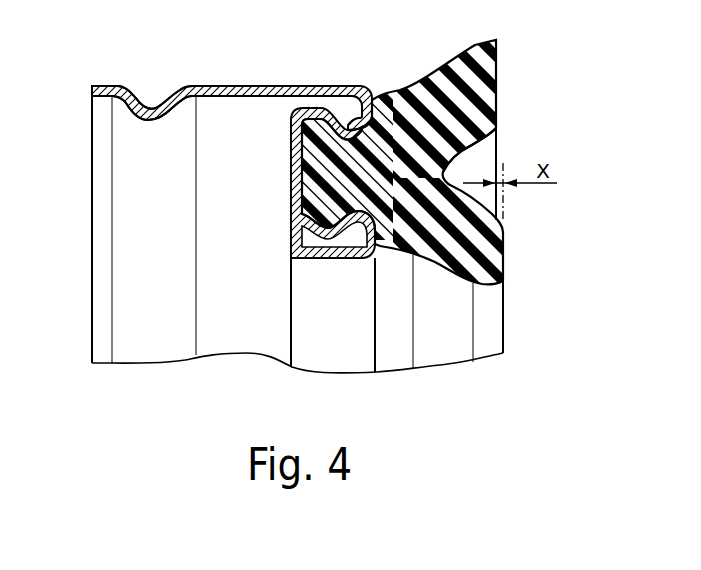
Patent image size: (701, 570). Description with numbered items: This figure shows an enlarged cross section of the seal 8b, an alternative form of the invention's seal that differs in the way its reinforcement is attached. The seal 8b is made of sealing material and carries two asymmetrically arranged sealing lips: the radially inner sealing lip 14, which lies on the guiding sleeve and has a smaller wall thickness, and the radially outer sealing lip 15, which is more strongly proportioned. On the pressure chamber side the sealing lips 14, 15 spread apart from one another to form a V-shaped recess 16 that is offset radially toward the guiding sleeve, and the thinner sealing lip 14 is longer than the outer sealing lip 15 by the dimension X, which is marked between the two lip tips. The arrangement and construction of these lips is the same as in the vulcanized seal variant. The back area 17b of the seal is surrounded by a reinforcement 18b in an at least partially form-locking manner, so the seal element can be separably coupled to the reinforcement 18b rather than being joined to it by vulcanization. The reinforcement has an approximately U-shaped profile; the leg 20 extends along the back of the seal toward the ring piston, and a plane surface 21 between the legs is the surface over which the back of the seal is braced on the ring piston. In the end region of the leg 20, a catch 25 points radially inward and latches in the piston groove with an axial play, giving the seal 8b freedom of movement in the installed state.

The seal 8b is at (316, 72).
The leg 20 is at (240, 86).
The catch 25 is at (152, 120).
The reinforcement 18b is at (262, 100).
The plane surface 21 is at (298, 199).
The back area 17b is at (392, 103).
The radially outer sealing lip 15 is at (485, 92).
The V-shaped recess 16 is at (483, 150).
The radially inner sealing lip 14 is at (490, 252).